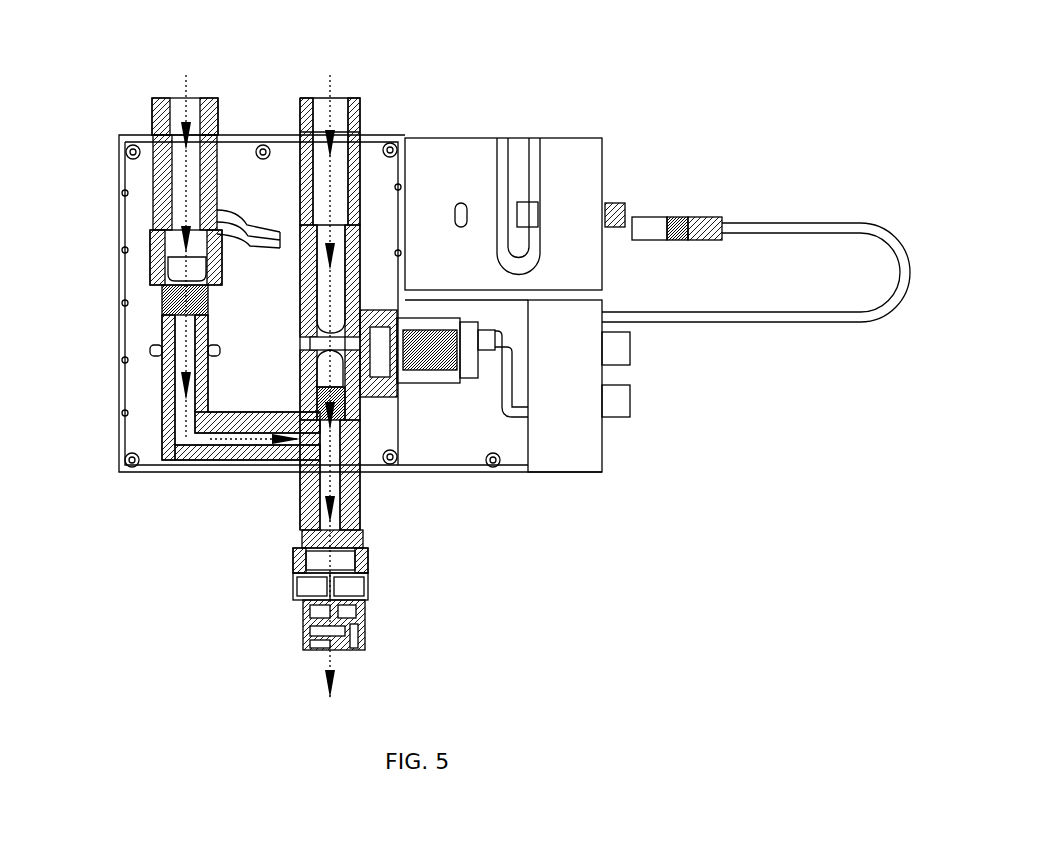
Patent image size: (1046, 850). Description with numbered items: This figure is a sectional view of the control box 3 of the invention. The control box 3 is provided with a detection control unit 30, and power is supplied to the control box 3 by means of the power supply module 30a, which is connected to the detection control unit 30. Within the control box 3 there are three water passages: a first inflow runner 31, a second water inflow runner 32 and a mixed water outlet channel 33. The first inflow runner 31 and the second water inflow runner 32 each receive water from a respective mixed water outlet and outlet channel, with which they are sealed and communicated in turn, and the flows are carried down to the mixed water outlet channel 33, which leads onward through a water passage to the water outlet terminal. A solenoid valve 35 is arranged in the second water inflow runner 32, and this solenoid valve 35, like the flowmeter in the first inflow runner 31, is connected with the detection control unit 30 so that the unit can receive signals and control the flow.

The control box 3 is at (125, 137).
The first inflow runner 31 is at (153, 235).
The second water inflow runner 32 is at (338, 165).
The mixed water outlet channel 33 is at (368, 547).
The solenoid valve 35 is at (403, 383).
The detection control unit 30 is at (567, 412).
The power supply module 30a is at (568, 178).